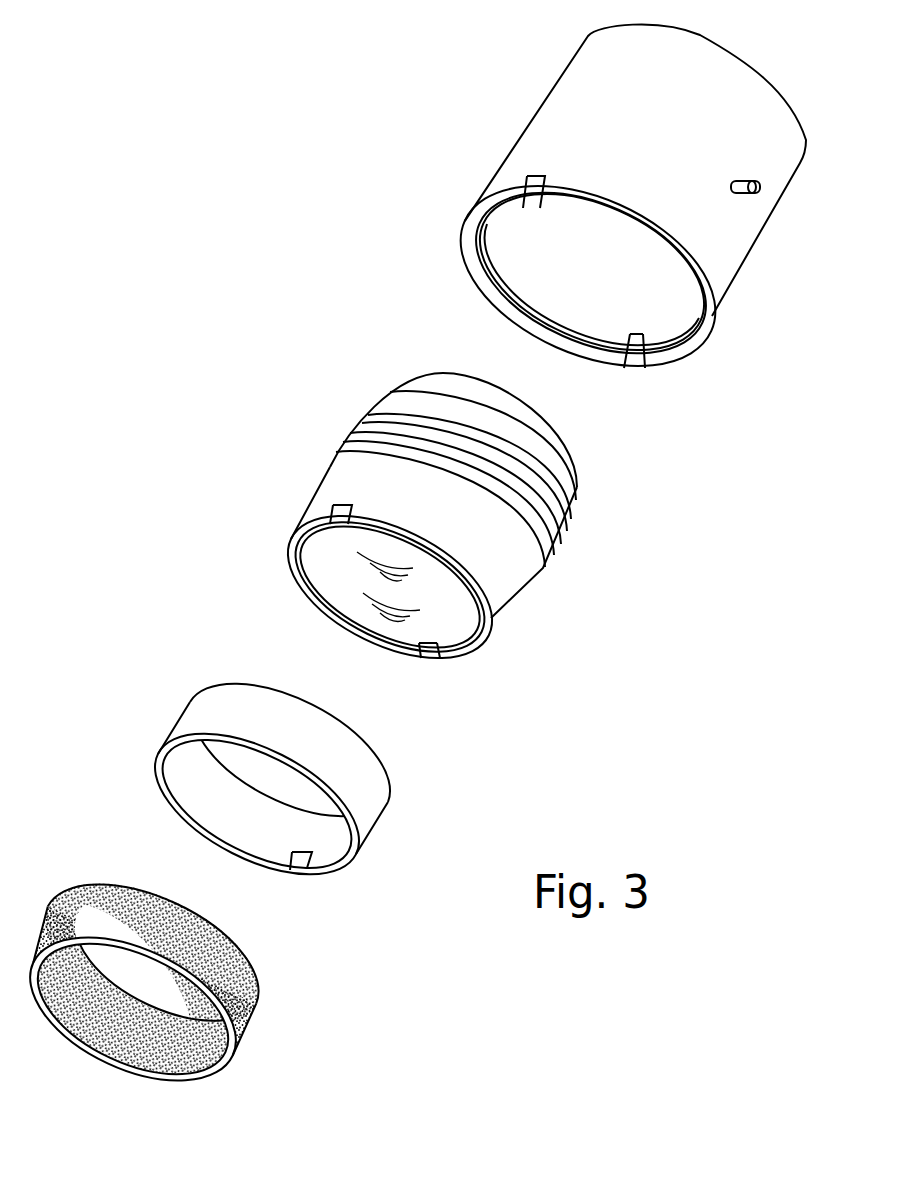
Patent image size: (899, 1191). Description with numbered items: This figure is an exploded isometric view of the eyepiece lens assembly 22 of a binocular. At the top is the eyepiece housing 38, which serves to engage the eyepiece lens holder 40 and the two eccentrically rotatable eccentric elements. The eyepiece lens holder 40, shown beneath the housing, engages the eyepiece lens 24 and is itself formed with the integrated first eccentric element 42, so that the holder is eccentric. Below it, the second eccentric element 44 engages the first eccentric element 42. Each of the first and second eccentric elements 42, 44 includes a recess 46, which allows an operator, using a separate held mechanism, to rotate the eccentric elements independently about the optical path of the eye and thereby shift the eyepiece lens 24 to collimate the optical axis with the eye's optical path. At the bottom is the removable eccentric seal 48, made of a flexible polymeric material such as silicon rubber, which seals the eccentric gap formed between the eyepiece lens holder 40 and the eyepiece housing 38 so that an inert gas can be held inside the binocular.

The eyepiece lens assembly 22 is at (619, 213).
The eyepiece housing 38 is at (727, 253).
The eyepiece lens 24 is at (313, 568).
The eyepiece lens holder 40 is at (325, 505).
The first eccentrically rotatable eccentric element 42 is at (473, 640).
The recess 46 is at (340, 528).
The second eccentrically rotatable eccentric element 44 is at (350, 850).
The eccentric seal 48 is at (215, 1063).